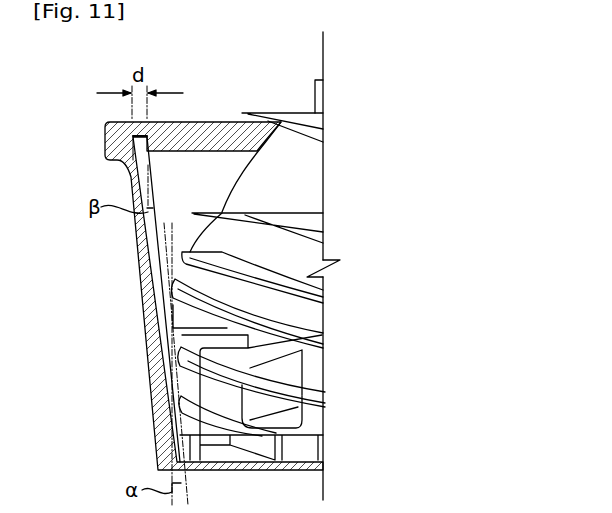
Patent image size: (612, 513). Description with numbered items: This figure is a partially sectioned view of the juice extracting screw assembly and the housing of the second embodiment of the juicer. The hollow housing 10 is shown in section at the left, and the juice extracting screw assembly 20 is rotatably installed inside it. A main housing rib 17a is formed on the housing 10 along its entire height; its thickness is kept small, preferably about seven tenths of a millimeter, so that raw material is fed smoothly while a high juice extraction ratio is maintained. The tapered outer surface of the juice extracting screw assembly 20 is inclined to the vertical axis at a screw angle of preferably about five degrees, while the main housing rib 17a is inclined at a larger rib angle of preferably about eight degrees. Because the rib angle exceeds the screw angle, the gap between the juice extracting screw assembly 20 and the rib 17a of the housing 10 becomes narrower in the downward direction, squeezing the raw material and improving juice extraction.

The housing 10 is at (158, 417).
The main housing rib 17a is at (136, 145).
The juice extracting screw assembly 20 is at (302, 176).